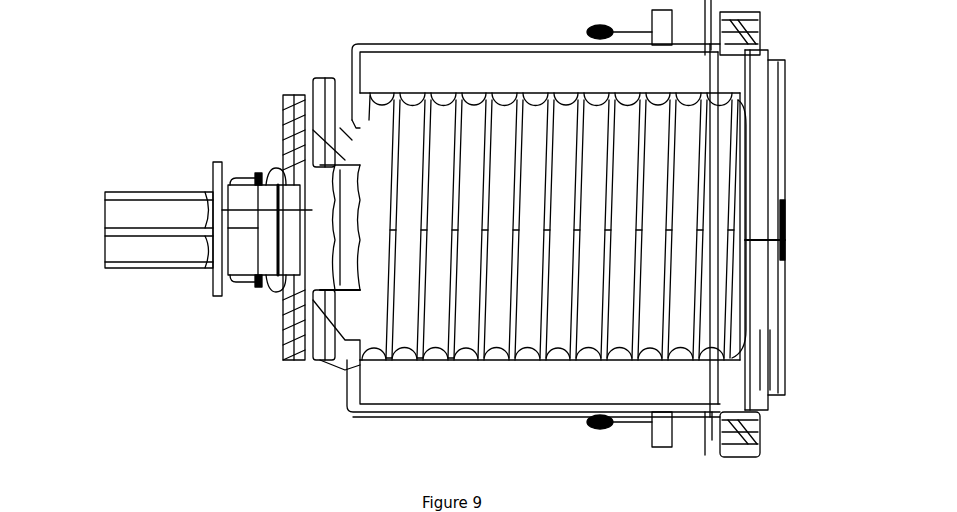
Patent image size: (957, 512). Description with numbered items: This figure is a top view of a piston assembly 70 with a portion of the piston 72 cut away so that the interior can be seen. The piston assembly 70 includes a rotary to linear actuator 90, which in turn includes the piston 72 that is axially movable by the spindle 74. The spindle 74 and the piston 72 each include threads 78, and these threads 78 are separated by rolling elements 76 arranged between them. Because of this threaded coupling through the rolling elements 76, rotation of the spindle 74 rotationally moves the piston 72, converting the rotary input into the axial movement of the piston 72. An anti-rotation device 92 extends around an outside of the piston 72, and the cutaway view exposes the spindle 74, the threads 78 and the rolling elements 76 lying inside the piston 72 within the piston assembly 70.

The piston assembly 70 is at (196, 78).
The rotary to linear actuator 90 is at (485, 236).
The piston 72 is at (386, 66).
The spindle 74 is at (720, 273).
The rolling elements 76 is at (455, 357).
The threads 78 is at (402, 297).
The anti-rotation device 92 is at (700, 30).